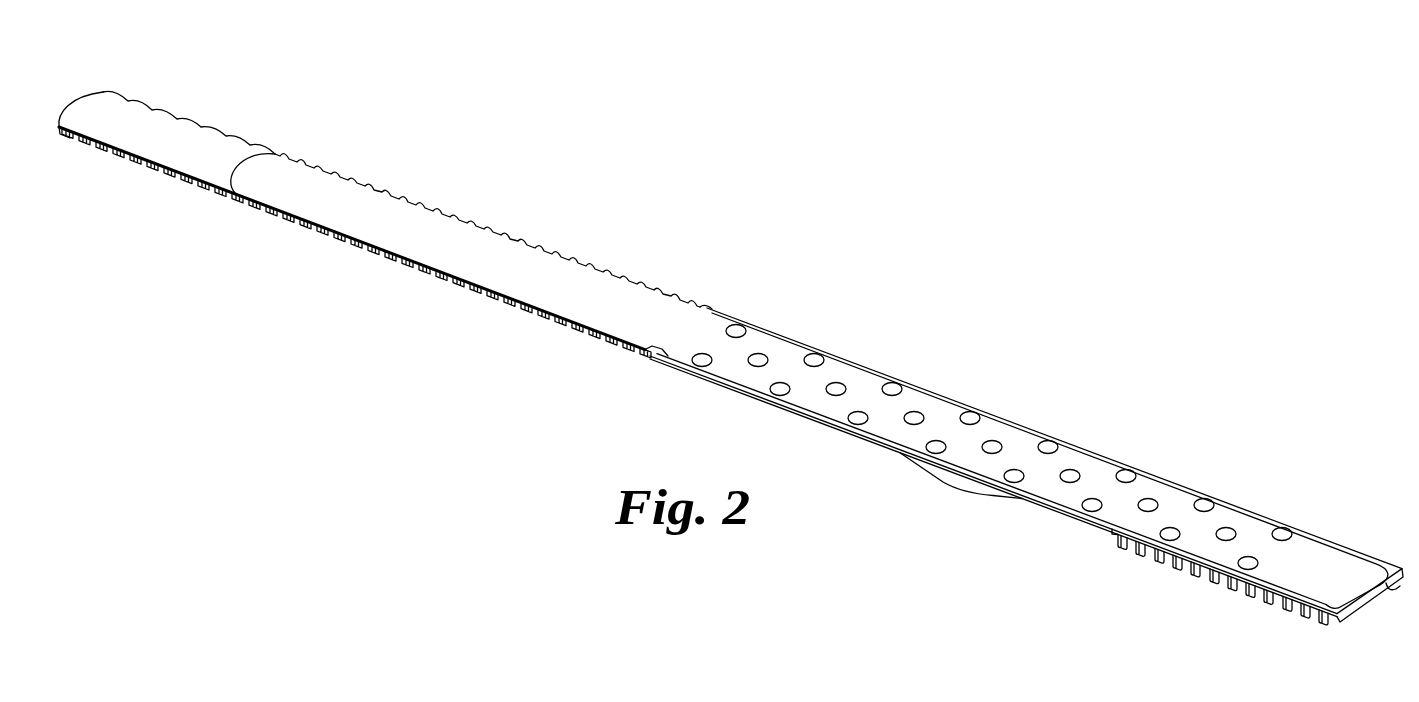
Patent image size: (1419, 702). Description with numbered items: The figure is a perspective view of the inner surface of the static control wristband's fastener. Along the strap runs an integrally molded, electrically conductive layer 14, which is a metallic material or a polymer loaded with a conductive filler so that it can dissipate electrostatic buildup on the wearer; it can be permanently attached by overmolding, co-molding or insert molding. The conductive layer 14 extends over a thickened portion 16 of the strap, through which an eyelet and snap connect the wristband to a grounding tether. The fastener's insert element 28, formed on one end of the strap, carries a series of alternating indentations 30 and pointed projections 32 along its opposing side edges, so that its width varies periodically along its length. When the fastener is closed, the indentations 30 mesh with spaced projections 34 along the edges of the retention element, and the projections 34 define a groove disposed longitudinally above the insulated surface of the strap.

The electrically conductive layer 14 is at (758, 340).
The thickened portion 16 is at (957, 480).
The insert element 28 is at (133, 117).
The indentations 30 is at (157, 173).
The pointed projections 32 is at (273, 150).
The projections 34 is at (1167, 558).